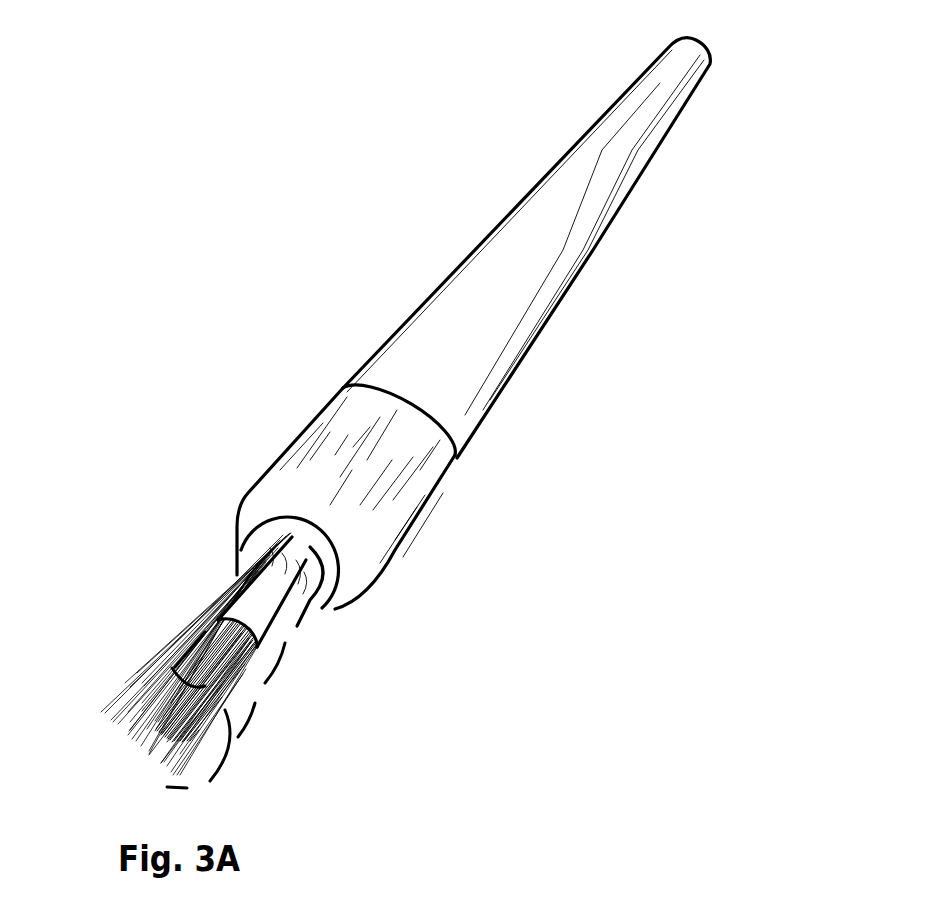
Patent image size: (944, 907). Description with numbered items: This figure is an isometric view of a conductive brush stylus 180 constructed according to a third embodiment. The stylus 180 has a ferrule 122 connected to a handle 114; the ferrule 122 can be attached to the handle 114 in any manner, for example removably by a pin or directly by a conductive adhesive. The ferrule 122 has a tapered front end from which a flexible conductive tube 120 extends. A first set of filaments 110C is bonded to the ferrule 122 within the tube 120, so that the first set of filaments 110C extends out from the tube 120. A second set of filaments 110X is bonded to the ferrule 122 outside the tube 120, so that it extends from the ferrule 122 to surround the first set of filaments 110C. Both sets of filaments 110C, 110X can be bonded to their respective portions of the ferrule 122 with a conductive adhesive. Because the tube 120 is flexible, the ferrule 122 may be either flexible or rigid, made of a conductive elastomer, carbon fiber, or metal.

The stylus 180 is at (164, 216).
The handle 114 is at (597, 191).
The ferrule 122 is at (410, 493).
The flexible conductive tube 120 is at (262, 596).
The first set of filaments 110C is at (230, 646).
The second set of filaments 110X is at (153, 645).